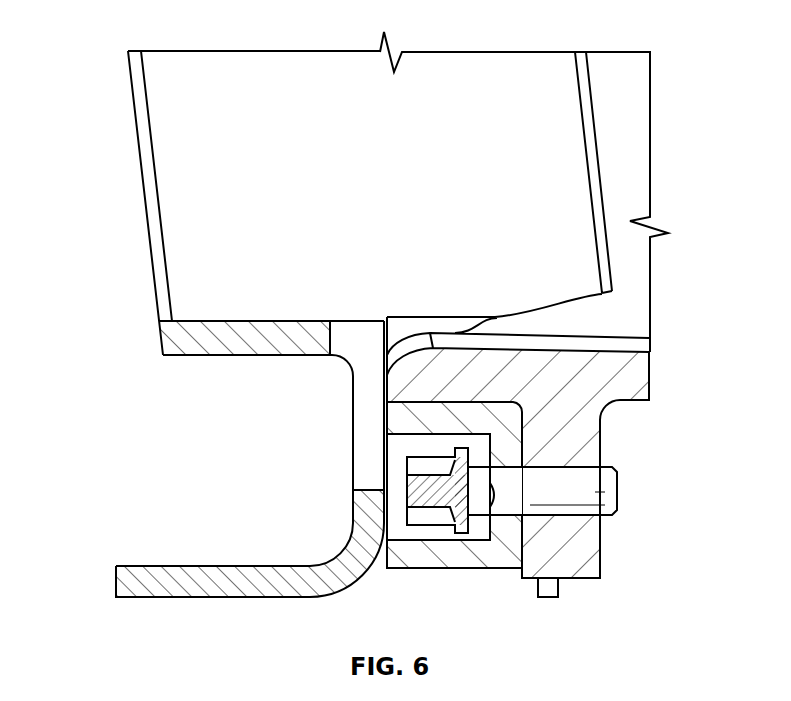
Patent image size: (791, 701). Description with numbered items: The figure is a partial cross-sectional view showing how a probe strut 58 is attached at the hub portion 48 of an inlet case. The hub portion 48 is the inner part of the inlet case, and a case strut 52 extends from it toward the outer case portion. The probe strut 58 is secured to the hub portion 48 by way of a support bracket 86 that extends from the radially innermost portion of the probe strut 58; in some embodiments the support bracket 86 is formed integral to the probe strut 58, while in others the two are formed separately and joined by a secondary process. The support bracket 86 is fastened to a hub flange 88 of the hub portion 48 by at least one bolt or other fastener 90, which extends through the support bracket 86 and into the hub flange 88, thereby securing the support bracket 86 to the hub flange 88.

The hub portion 48 is at (630, 387).
The case strut 52 is at (628, 120).
The probe strut 58 is at (168, 112).
The support bracket 86 is at (338, 558).
The hub flange 88 is at (572, 568).
The bolt or other fastener 90 is at (455, 518).